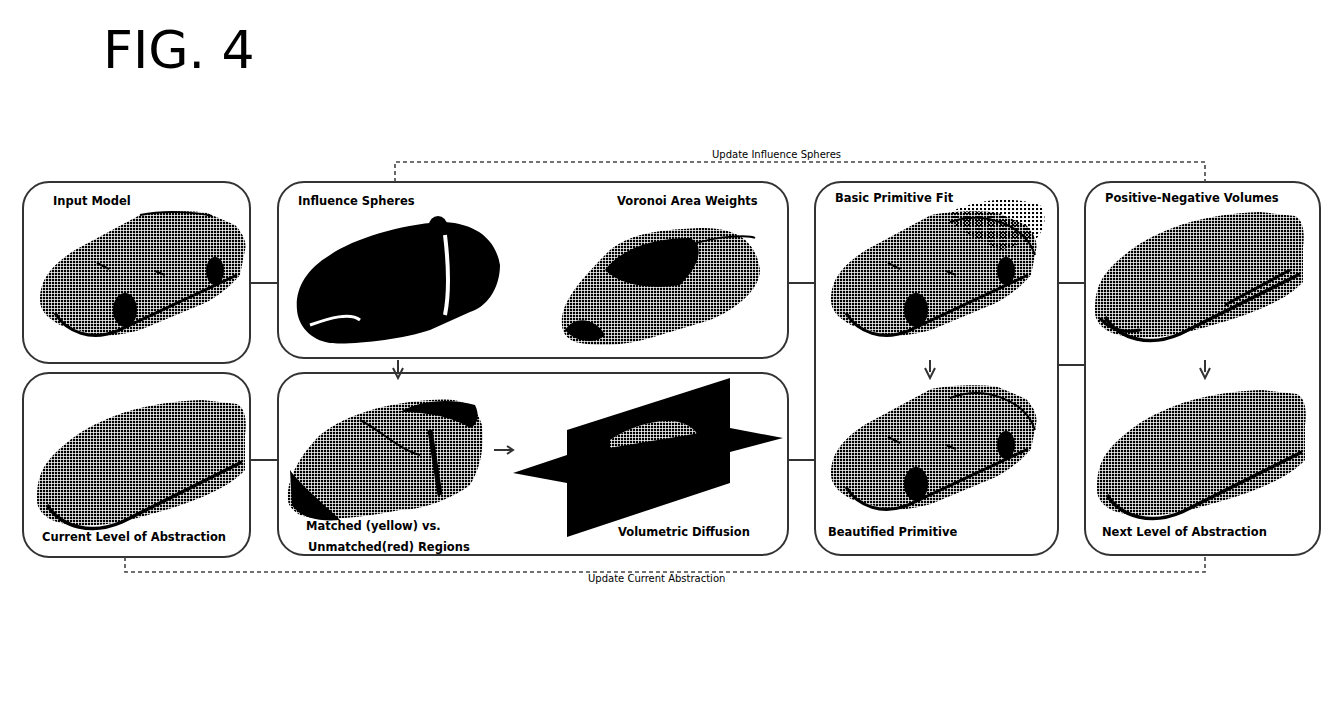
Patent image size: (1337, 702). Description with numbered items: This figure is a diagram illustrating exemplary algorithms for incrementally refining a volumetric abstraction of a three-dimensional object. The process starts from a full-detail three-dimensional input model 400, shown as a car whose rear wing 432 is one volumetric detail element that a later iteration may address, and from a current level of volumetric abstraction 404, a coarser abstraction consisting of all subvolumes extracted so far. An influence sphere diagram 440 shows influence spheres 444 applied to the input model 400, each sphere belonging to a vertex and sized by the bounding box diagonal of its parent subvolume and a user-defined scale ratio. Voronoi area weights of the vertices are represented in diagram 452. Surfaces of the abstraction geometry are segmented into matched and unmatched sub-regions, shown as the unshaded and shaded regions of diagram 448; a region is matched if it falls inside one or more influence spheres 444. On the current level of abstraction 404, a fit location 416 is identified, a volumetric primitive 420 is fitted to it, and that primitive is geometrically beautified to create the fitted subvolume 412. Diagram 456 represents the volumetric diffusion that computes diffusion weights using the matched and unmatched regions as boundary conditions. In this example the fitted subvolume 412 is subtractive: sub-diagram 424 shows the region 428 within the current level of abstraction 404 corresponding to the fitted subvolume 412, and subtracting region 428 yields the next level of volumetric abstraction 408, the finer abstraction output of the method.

The 3D input model 400 is at (156, 208).
The rear wing 432 is at (210, 215).
The influence sphere diagram 440 is at (497, 225).
The influence spheres 444 is at (438, 222).
The Voronoi area weights diagram 452 is at (630, 240).
The volumetric primitive 420 is at (1020, 225).
The fitted subvolume 412 is at (1002, 389).
The region 428 is at (1278, 215).
The sub-diagram 424 is at (1273, 298).
The current level of volumetric abstraction 404 is at (1113, 327).
The next level of volumetric abstraction 408 is at (1278, 479).
The fit location 416 is at (435, 403).
The matched and unmatched regions diagram 448 is at (458, 497).
The volumetric diffusion diagram 456 is at (737, 492).